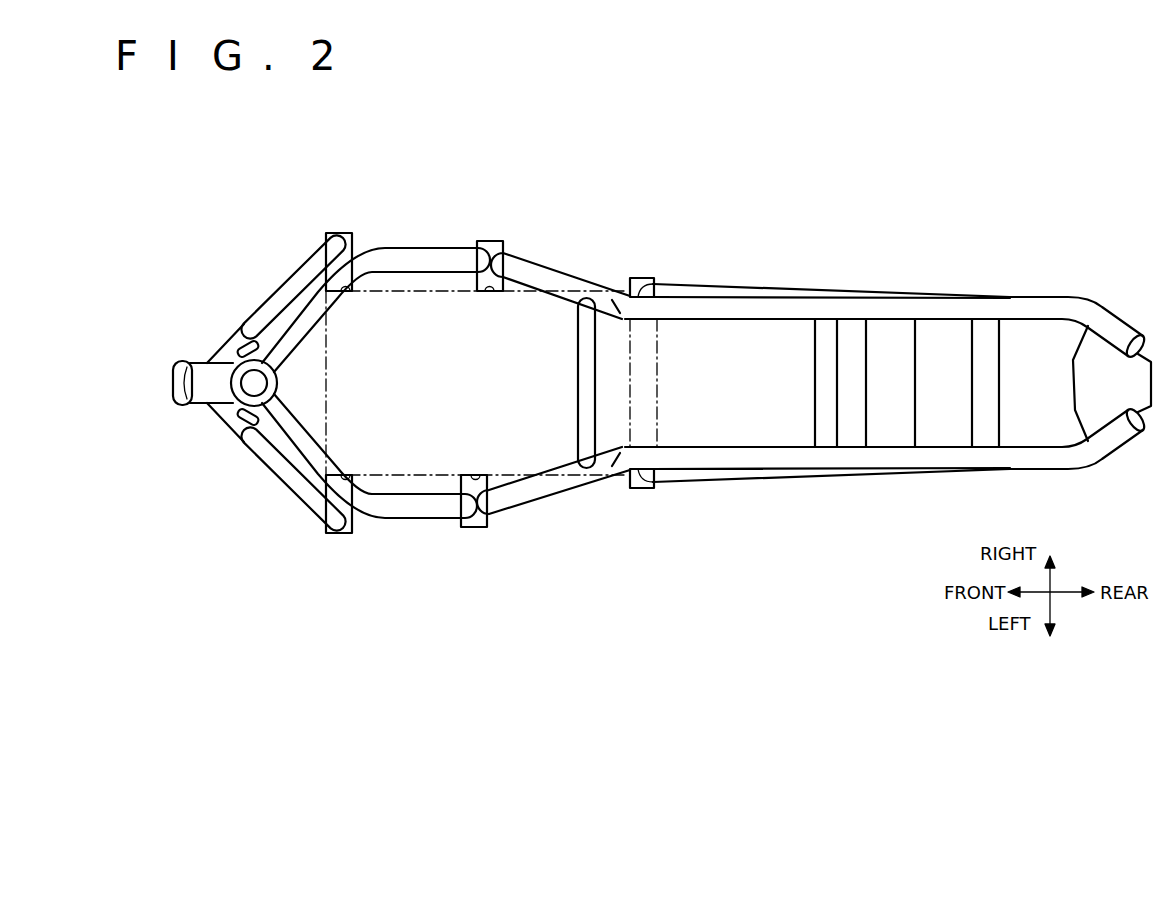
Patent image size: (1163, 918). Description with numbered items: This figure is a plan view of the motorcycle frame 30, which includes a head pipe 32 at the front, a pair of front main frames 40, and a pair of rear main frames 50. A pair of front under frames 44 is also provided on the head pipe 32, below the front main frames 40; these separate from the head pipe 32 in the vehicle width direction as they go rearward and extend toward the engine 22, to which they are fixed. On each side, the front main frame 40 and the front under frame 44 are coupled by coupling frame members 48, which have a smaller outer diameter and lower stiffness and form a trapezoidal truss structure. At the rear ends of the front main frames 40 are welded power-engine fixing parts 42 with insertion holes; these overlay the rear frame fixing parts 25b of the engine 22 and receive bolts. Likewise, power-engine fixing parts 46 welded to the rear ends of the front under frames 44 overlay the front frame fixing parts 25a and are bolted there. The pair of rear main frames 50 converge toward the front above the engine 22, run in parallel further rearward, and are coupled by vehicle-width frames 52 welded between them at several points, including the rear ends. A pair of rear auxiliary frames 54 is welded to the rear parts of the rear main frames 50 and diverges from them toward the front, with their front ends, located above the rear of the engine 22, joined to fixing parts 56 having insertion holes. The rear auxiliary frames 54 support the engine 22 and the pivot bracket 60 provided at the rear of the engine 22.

The engine 22 is at (407, 478).
The front frame fixing part 25a is at (350, 292).
The rear frame fixing part 25b is at (485, 292).
The motorcycle frame 30 is at (570, 259).
The head pipe 32 is at (200, 361).
The front main frame 40 is at (302, 418).
The power-engine fixing part 42 is at (489, 241).
The front under frame 44 is at (274, 294).
The power-engine fixing part 46 is at (341, 232).
The coupling frame member 48 is at (244, 340).
The rear main frame 50 is at (748, 320).
The vehicle-width frame 52 is at (578, 383).
The rear auxiliary frame 54 is at (748, 285).
The fixing part 56 is at (645, 278).
The pivot bracket 60 is at (658, 384).